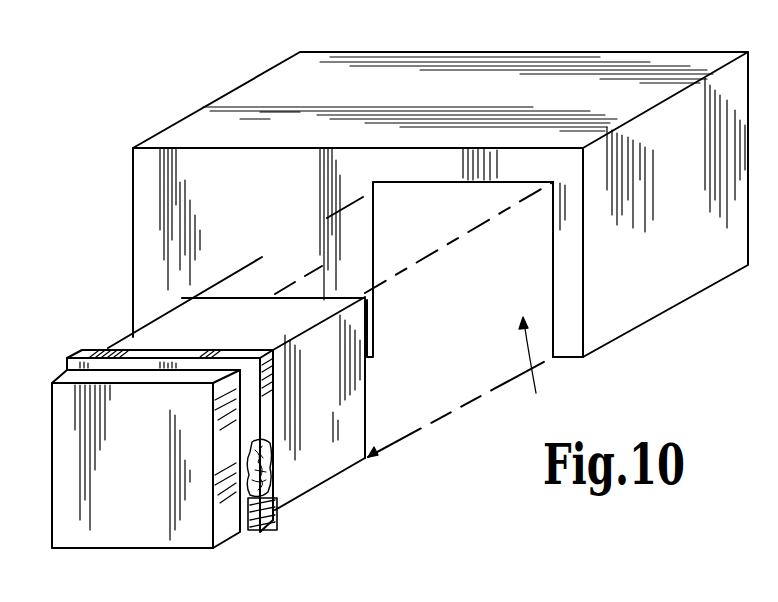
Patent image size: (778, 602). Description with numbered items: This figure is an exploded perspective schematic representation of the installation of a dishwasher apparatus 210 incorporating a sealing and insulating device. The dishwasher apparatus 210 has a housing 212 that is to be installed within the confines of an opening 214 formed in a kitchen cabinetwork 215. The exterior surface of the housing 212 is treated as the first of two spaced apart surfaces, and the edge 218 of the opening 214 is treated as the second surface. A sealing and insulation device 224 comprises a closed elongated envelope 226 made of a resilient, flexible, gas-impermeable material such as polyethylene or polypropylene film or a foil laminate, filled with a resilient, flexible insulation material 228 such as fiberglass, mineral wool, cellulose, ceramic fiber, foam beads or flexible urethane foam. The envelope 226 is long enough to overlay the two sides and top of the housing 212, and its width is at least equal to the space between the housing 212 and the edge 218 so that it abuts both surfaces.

The dishwasher apparatus 210 is at (152, 322).
The housing 212 is at (317, 346).
The opening 214 is at (538, 369).
The kitchen cabinetwork 215 is at (523, 60).
The edge 218 is at (556, 243).
The sealing and insulation device 224 is at (86, 346).
The closed elongated envelope 226 is at (279, 500).
The insulation material 228 is at (248, 518).